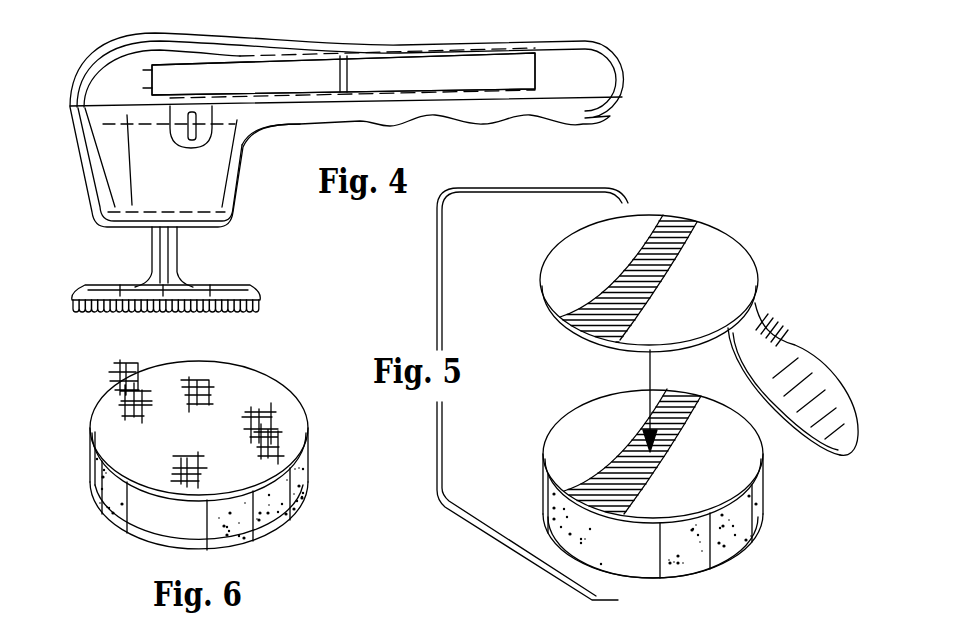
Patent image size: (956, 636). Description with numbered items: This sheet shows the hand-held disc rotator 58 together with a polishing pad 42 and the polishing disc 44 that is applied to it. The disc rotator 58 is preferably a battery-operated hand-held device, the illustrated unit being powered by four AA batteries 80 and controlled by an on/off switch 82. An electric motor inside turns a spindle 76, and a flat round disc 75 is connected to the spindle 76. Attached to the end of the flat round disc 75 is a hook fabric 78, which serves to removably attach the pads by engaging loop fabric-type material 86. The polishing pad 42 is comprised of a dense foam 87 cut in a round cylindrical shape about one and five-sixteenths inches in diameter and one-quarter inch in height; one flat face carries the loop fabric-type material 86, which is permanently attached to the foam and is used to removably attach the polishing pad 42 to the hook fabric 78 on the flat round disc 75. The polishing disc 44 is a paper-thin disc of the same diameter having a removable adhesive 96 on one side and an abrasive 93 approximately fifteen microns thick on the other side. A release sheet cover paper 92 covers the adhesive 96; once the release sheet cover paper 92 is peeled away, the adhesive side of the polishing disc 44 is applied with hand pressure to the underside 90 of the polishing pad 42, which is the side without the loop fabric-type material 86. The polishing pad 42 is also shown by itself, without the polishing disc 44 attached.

In FIG. 6, the polishing pad 42 is at (313, 429).
In FIG. 5, the polishing pad 42 is at (542, 462).
In FIG. 5, the polishing disc 44 is at (677, 324).
In FIG. 4, the hand-held disc rotator 58 is at (623, 104).
In FIG. 4, the flat round disc 75 is at (82, 285).
In FIG. 4, the spindle 76 is at (180, 257).
In FIG. 4, the hook fabric 78 is at (262, 315).
In FIG. 4, the AA batteries 80 is at (520, 68).
In FIG. 4, the on/off switch 82 is at (245, 150).
In FIG. 6, the loop fabric-type material 86 is at (117, 528).
In FIG. 5, the loop fabric-type material 86 is at (743, 547).
In FIG. 6, the dense foam 87 is at (90, 452).
In FIG. 5, the underside of the polishing pad 90 is at (590, 437).
In FIG. 5, the release sheet cover paper 92 is at (797, 349).
In FIG. 5, the abrasive 93 is at (641, 392).
In FIG. 5, the removable adhesive 96 is at (567, 330).